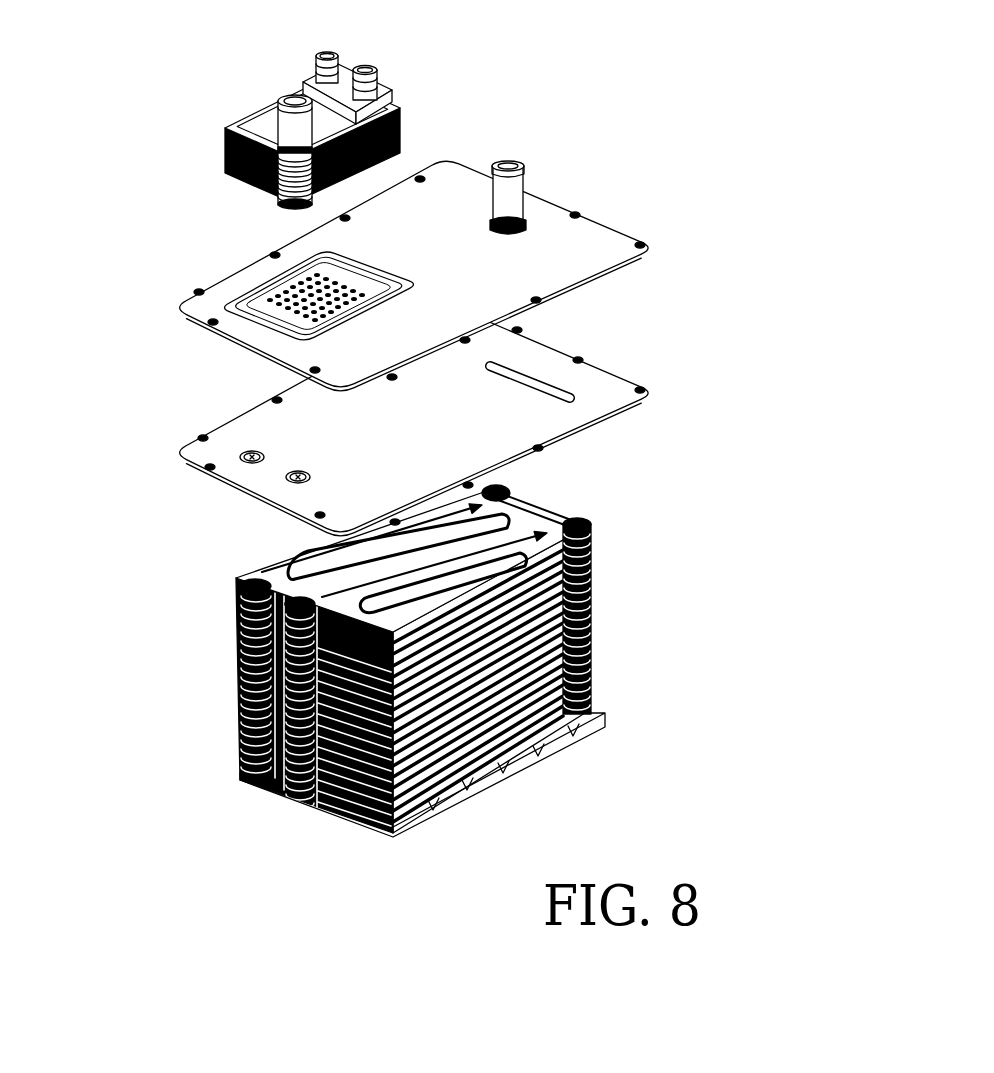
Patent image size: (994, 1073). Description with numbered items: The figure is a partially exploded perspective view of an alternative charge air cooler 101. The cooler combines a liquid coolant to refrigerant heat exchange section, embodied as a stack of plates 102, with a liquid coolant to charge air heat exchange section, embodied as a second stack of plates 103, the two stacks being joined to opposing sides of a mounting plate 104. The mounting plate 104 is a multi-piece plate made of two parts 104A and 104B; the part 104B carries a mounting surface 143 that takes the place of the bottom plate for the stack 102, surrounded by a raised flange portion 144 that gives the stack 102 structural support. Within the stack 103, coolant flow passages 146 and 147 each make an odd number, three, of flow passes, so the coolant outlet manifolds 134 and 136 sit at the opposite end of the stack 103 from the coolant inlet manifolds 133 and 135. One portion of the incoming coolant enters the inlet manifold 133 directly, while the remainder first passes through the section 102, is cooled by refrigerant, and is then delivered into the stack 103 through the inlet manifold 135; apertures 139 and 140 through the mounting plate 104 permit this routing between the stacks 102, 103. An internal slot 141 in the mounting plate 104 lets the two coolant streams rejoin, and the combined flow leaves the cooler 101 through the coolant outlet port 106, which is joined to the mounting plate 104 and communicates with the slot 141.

The charge air cooler 101 is at (442, 419).
The stack of plates 102 is at (397, 93).
The stack of plates 103 is at (453, 651).
The mounting plate 104 is at (410, 348).
The mounting plate part 104A is at (360, 419).
The mounting plate part 104B is at (350, 276).
The coolant outlet port 106 is at (515, 195).
The coolant inlet manifold 133 is at (297, 597).
The coolant outlet manifold 134 is at (577, 519).
The coolant inlet manifold 135 is at (245, 562).
The coolant outlet manifold 136 is at (510, 487).
The aperture 139 is at (263, 323).
The aperture 140 is at (233, 297).
The internal slot 141 is at (528, 382).
The mounting surface 143 is at (263, 293).
The raised flange portion 144 is at (368, 260).
The coolant flow passage 146 is at (555, 565).
The coolant flow passage 147 is at (342, 563).